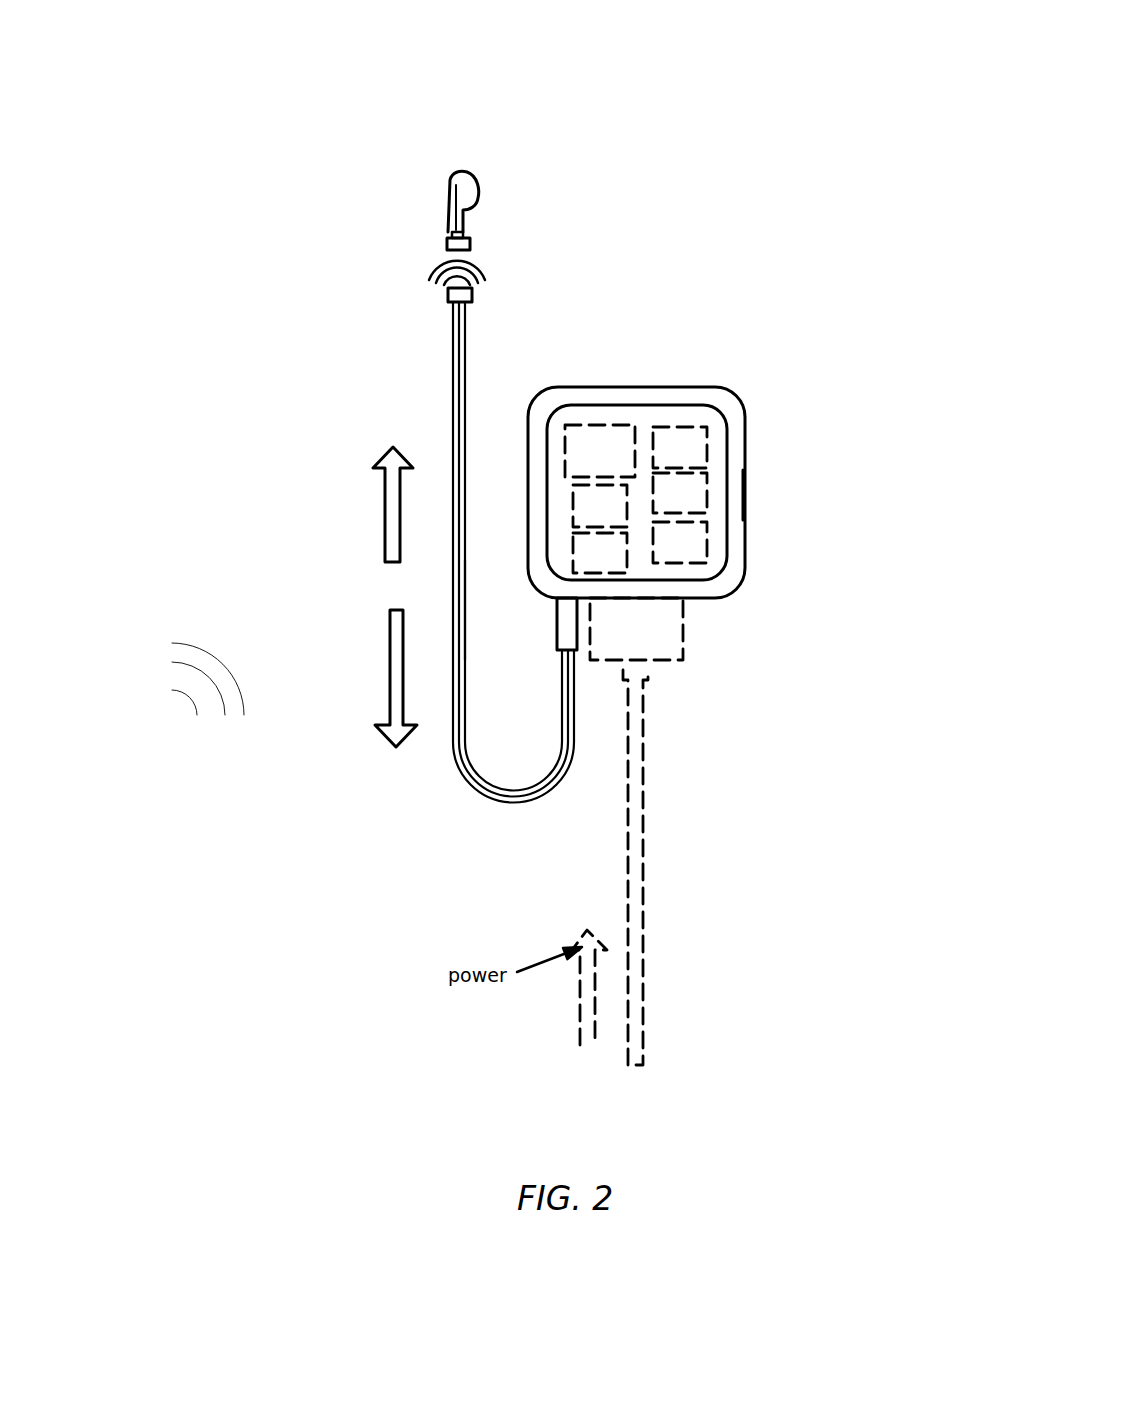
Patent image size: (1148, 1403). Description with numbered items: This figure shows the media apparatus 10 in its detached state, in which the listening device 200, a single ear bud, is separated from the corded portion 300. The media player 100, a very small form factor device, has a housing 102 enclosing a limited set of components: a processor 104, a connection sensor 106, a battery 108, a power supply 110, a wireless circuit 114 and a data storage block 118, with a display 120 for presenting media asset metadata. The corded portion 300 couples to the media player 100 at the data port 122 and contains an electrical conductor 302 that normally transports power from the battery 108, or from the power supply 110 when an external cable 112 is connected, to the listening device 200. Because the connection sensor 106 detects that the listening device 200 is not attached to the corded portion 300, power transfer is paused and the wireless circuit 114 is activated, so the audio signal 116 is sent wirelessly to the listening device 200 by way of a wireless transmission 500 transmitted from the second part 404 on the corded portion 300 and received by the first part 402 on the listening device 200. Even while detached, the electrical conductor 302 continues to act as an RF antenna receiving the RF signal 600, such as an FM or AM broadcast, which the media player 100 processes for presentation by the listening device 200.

The media apparatus 10 is at (681, 86).
The media player 100 is at (678, 355).
The housing 102 is at (583, 400).
The processor 104 is at (600, 451).
The connection sensor 106 is at (680, 447).
The battery 108 is at (680, 493).
The power supply 110 is at (600, 553).
The cable 112 is at (643, 768).
The wireless circuit 114 is at (680, 542).
The audio signal 116 is at (370, 491).
The data storage block 118 is at (600, 506).
The display 120 is at (727, 502).
The data port 122 is at (567, 622).
The listening device 200 is at (477, 198).
The corded portion 300 is at (467, 775).
The electrical conductor 302 is at (465, 615).
The first part 402 is at (448, 240).
The second part 404 is at (448, 300).
The wireless transmission 500 is at (405, 267).
The RF signal 600 is at (374, 662).